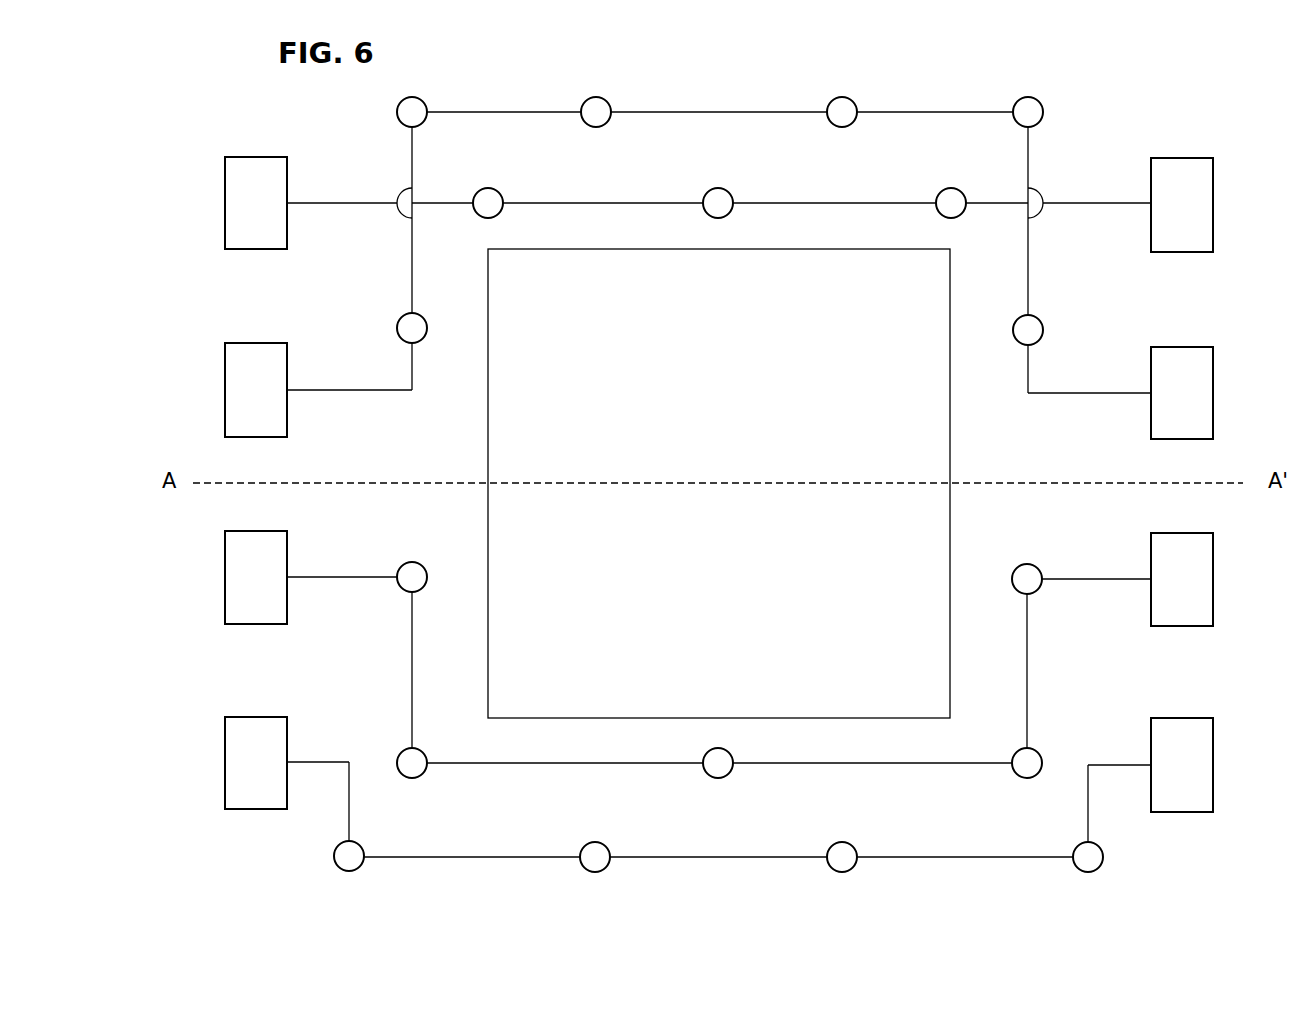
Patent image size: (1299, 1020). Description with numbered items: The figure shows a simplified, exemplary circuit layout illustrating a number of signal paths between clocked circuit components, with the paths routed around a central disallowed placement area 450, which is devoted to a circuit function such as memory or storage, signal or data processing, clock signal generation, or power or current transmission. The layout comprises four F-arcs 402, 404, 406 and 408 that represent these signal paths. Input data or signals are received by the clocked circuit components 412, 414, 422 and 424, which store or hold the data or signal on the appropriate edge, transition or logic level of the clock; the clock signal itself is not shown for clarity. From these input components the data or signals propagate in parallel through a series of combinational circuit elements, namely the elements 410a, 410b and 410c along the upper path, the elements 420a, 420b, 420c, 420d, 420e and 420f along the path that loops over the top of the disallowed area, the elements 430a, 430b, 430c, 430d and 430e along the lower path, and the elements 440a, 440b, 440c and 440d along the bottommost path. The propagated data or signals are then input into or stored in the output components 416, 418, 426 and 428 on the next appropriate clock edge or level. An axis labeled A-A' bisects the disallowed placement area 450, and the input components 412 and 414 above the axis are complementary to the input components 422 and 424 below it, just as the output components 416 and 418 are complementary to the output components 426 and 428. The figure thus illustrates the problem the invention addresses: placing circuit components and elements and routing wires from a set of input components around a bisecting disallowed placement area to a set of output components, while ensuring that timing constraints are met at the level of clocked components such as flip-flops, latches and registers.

The F-arc 402 is at (347, 203).
The F-arc 404 is at (412, 283).
The F-arc 406 is at (322, 577).
The F-arc 408 is at (504, 857).
The combinational circuit element 410a is at (499, 191).
The combinational circuit element 410b is at (729, 191).
The combinational circuit element 410c is at (945, 190).
The clocked circuit component 412 is at (239, 157).
The clocked circuit component 414 is at (239, 343).
The output component 416 is at (1200, 158).
The output component 418 is at (1200, 347).
The combinational circuit element 420a is at (420, 315).
The combinational circuit element 420b is at (423, 100).
The combinational circuit element 420c is at (607, 100).
The combinational circuit element 420d is at (853, 100).
The combinational circuit element 420e is at (1039, 100).
The combinational circuit element 420f is at (1035, 316).
The clocked circuit component 422 is at (233, 531).
The clocked circuit component 424 is at (239, 717).
The output component 426 is at (1200, 533).
The output component 428 is at (1200, 718).
The combinational circuit element 430a is at (420, 565).
The combinational circuit element 430b is at (420, 775).
The combinational circuit element 430c is at (725, 776).
The combinational circuit element 430d is at (1018, 775).
The combinational circuit element 430e is at (1035, 566).
The combinational circuit element 440a is at (335, 864).
The combinational circuit element 440b is at (608, 868).
The combinational circuit element 440c is at (855, 868).
The combinational circuit element 440d is at (1100, 869).
The disallowed placement area 450 is at (951, 465).